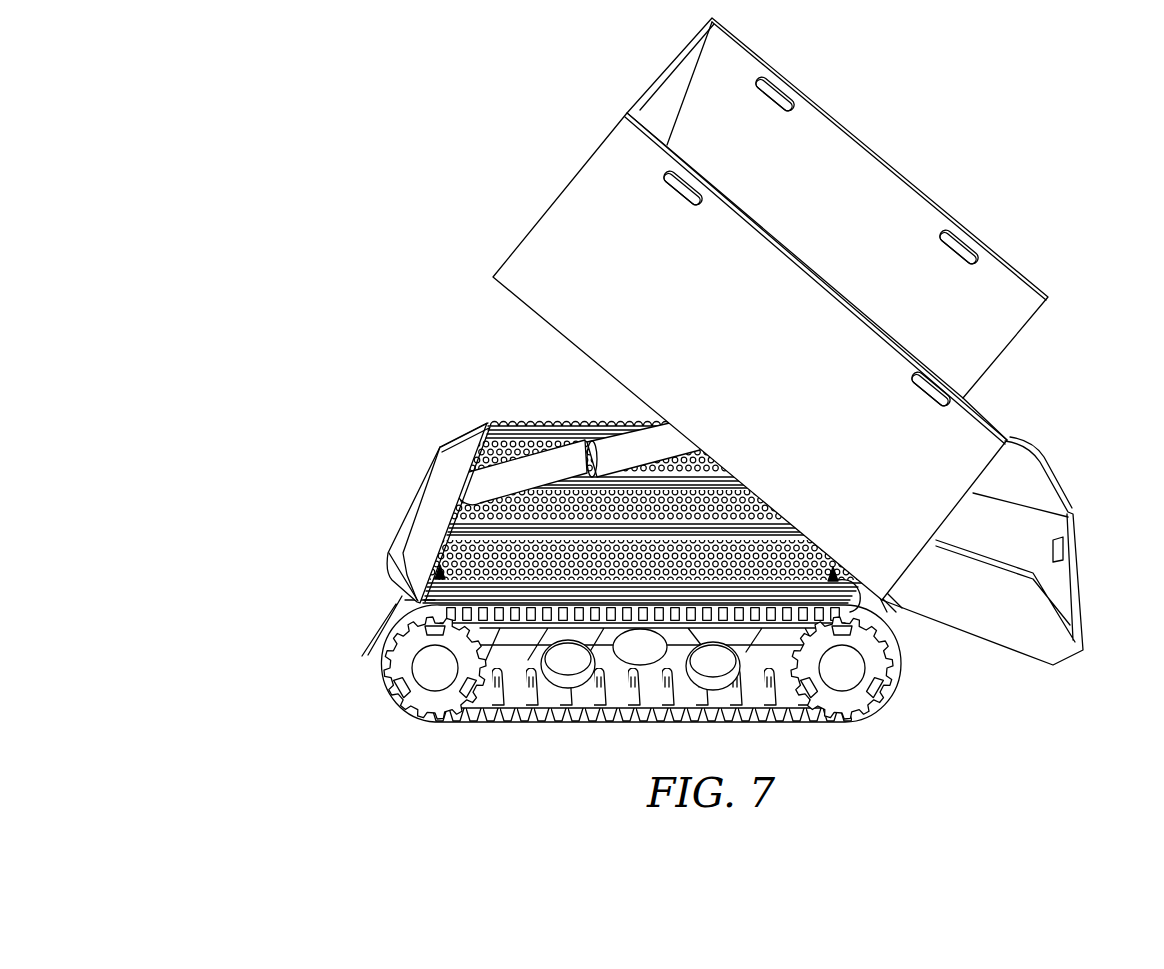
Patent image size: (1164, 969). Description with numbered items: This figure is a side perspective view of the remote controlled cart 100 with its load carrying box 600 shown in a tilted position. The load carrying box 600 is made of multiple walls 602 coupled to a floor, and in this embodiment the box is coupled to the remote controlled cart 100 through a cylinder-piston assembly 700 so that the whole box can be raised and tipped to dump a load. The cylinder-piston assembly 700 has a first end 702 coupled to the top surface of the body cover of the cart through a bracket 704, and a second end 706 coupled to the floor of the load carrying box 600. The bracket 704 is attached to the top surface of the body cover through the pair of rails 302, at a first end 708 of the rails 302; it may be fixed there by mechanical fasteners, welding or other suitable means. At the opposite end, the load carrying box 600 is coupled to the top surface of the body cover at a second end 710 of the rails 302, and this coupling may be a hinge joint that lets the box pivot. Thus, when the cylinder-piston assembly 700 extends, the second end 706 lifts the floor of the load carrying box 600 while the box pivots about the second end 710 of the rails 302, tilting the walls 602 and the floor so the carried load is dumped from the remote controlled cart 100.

The remote controlled cart 100 is at (240, 170).
The rails 302 is at (488, 425).
The load carrying box 600 is at (528, 170).
The walls 602 is at (692, 81).
The cylinder-piston assembly 700 is at (520, 455).
The first end 702 is at (458, 475).
The bracket 704 is at (410, 556).
The second end 706 is at (653, 420).
The first end of the rails 708 is at (417, 599).
The second end of the rails 710 is at (887, 603).